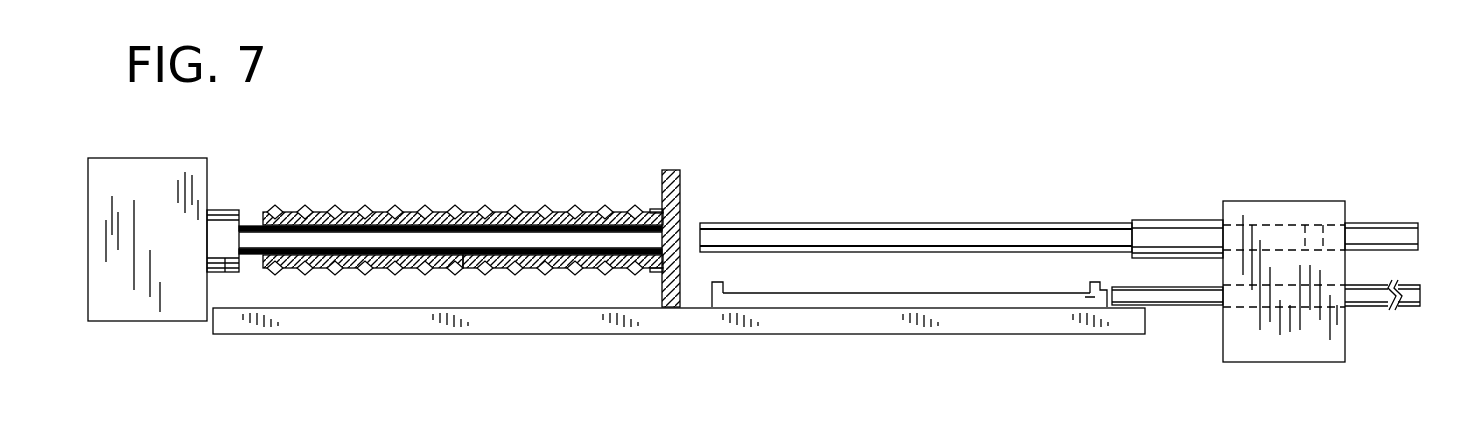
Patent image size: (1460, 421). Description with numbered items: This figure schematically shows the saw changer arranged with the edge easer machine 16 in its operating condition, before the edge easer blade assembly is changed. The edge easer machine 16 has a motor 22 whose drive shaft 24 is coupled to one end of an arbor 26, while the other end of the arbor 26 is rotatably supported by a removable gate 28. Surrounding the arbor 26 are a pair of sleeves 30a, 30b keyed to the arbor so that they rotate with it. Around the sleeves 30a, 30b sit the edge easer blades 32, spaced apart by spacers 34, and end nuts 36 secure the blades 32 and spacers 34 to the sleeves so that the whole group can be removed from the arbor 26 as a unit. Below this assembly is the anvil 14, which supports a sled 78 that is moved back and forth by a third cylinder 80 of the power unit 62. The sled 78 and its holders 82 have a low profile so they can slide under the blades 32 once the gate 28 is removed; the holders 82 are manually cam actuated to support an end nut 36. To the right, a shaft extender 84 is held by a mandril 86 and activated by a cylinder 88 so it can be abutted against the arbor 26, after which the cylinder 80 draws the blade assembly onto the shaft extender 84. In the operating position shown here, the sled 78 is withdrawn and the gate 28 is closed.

The anvil 14 is at (302, 333).
The edge easer machine 16 is at (593, 162).
The motor 22 is at (164, 256).
The drive shaft 24 is at (228, 262).
The arbor 26 is at (404, 253).
The removable gate 28 is at (676, 222).
The sleeve 30a is at (348, 272).
The sleeve 30b is at (528, 273).
The edge easer blades 32 is at (427, 210).
The spacers 34 is at (590, 276).
The end nuts 36 is at (270, 208).
The power unit 62 is at (1297, 210).
The sled 78 is at (856, 294).
The third cylinder 80 is at (1177, 308).
The holders 82 is at (717, 282).
The shaft extender 84 is at (857, 224).
The mandril 86 is at (1163, 227).
The cylinder 88 is at (1370, 222).